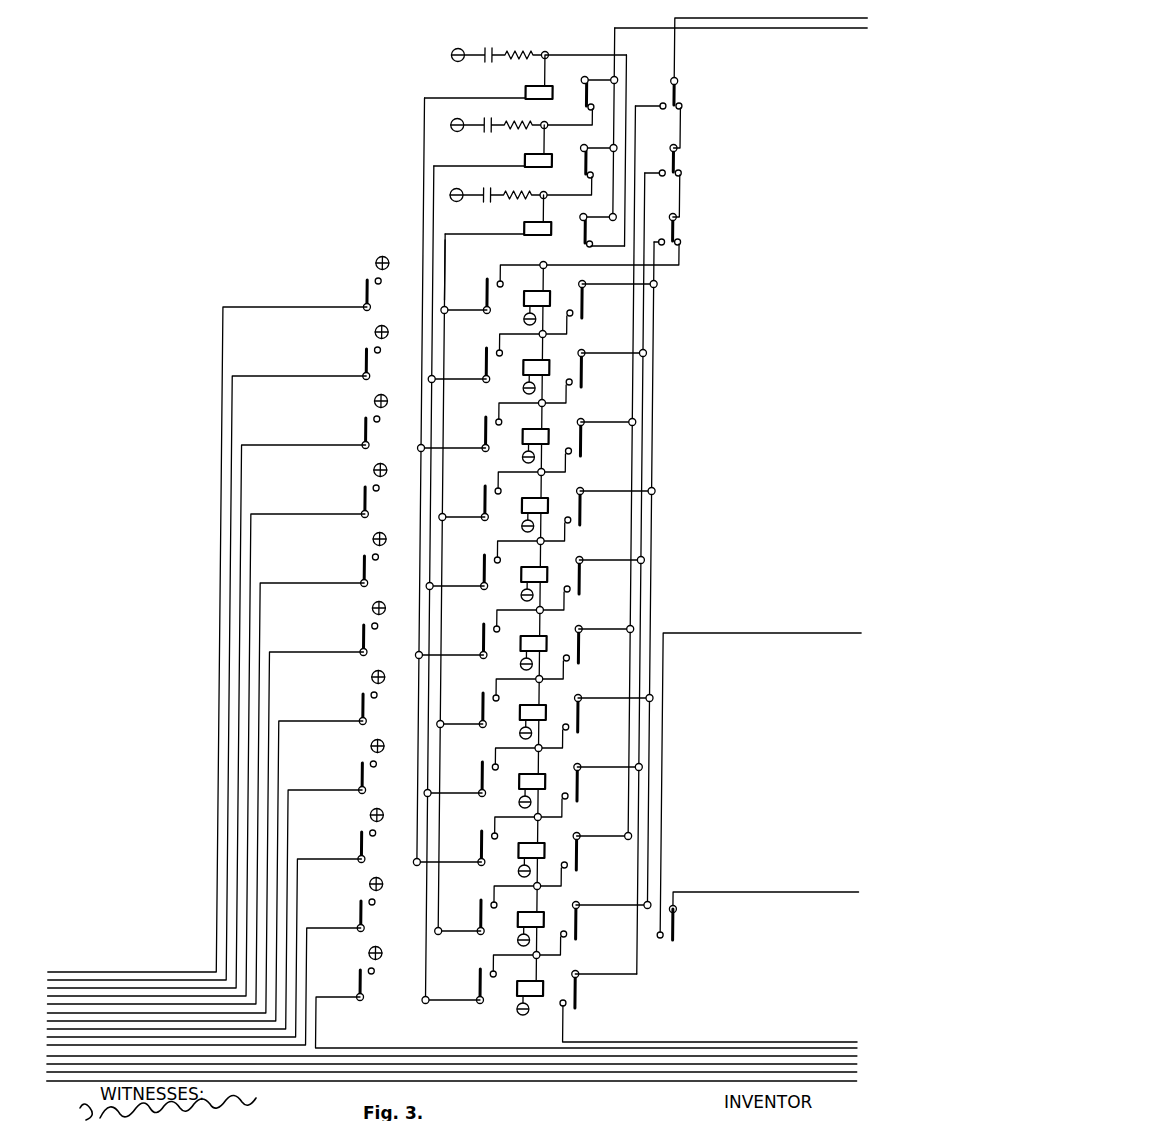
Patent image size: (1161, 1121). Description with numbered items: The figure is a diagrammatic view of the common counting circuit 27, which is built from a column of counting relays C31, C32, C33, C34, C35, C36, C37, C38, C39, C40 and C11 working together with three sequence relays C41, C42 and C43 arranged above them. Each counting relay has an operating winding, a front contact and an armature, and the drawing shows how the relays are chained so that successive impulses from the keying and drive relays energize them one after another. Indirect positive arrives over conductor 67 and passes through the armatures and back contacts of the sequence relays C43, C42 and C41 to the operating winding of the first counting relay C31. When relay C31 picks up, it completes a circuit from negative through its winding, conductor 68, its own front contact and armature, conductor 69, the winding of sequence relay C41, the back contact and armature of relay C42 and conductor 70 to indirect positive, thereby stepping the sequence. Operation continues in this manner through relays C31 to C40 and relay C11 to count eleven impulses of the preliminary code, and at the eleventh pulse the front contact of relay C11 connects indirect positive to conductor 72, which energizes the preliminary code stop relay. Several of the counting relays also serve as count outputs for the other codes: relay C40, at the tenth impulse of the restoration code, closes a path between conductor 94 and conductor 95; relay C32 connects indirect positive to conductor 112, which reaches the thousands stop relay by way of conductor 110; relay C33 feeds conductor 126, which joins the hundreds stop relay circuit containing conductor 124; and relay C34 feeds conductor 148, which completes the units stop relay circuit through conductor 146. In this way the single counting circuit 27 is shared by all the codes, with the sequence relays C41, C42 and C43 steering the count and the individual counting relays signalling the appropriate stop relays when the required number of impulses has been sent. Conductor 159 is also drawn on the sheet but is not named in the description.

The common counting circuit 27 is at (382, 50).
The conductor 67 is at (677, 24).
The conductor 70 is at (742, 30).
The conductor 68 is at (536, 264).
The conductor 69 is at (446, 275).
The conductor 94 is at (783, 636).
The conductor 95 is at (768, 892).
The conductor 112 is at (126, 978).
The conductor 126 is at (331, 447).
The conductor 148 is at (289, 517).
The conductor 72 is at (344, 1050).
The conductor 146 is at (402, 1057).
The conductor 124 is at (576, 1075).
The conductor 110 is at (529, 1084).
The conductor 159 is at (647, 971).
The sequence relay C43 is at (527, 86).
The sequence relay C42 is at (527, 153).
The sequence relay C41 is at (524, 227).
The counting relay C31 is at (523, 301).
The counting relay C32 is at (523, 370).
The counting relay C33 is at (523, 439).
The counting relay C34 is at (523, 508).
The counting relay C35 is at (523, 577).
The counting relay C36 is at (523, 646).
The counting relay C37 is at (523, 715).
The counting relay C38 is at (523, 784).
The counting relay C39 is at (519, 858).
The counting relay C40 is at (521, 924).
The counting relay C11 is at (640, 997).